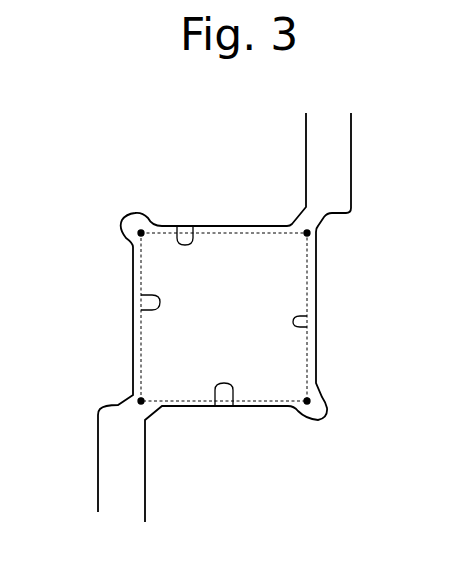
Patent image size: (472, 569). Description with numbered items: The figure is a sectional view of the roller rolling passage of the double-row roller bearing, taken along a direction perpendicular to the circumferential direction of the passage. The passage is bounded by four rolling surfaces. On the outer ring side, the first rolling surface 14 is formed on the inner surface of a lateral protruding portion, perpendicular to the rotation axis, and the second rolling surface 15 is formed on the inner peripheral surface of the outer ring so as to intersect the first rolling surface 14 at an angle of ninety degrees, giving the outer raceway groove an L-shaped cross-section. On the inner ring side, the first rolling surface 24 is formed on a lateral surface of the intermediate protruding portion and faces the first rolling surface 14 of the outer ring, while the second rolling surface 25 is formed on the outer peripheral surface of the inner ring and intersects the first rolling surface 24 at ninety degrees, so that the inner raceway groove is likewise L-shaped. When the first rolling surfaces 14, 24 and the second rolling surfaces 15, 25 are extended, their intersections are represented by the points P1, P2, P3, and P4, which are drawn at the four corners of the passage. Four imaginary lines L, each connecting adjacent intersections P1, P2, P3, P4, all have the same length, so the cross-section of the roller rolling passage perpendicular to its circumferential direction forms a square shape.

The first rolling surface 14 is at (189, 240).
The second rolling surface 15 is at (133, 292).
The first rolling surface 24 is at (217, 406).
The second rolling surface 25 is at (316, 330).
The imaginary line L is at (249, 226).
The intersection P1 is at (156, 248).
The intersection P2 is at (292, 248).
The intersection P3 is at (292, 389).
The intersection P4 is at (156, 389).